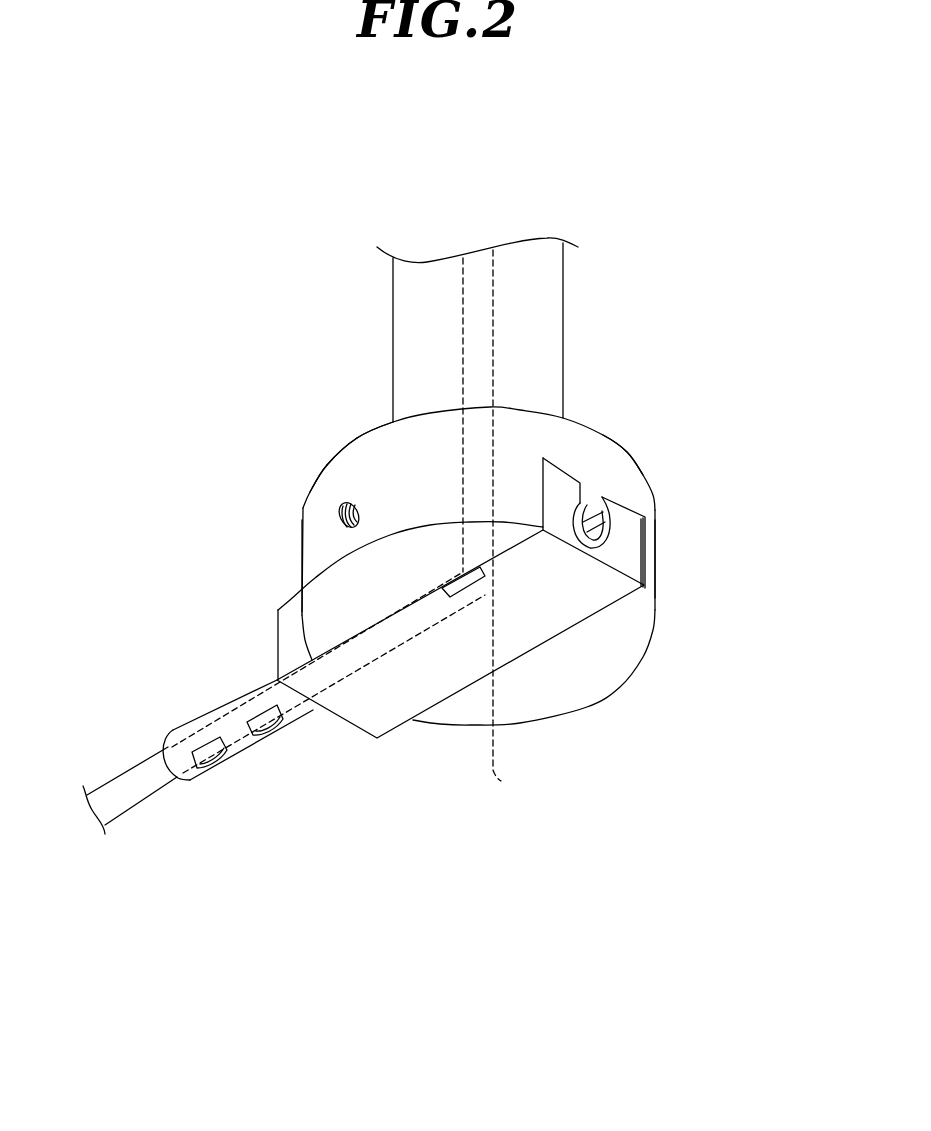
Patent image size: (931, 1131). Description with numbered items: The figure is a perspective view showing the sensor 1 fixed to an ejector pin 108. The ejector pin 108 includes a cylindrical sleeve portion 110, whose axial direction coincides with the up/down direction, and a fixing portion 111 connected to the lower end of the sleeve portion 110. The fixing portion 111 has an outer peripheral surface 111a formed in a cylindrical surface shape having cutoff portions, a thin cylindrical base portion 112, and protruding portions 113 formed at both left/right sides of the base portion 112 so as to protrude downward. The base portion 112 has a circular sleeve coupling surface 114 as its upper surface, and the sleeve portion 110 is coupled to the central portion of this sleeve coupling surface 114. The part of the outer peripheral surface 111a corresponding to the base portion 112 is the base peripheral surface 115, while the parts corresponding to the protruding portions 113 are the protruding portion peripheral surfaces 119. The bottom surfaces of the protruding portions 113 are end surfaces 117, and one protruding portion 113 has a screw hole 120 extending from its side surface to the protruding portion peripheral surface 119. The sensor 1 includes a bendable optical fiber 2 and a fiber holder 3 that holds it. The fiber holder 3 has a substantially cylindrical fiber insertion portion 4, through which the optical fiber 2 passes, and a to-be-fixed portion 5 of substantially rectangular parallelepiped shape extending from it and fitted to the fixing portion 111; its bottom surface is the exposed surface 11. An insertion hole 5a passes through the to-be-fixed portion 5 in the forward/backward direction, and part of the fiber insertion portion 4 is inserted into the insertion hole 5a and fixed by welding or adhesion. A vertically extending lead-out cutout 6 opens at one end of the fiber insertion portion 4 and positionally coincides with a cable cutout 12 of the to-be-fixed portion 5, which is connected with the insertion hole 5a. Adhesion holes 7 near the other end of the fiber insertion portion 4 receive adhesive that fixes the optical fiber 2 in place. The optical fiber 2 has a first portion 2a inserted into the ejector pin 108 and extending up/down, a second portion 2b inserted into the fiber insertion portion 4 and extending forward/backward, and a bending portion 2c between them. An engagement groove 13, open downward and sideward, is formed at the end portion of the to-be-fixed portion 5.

The sensor 1 is at (413, 688).
The optical fiber 2 is at (140, 787).
The first portion 2a is at (462, 282).
The second portion 2b is at (213, 711).
The bending portion 2c is at (511, 526).
The fiber holder 3 is at (410, 913).
The fiber insertion portion 4 is at (327, 717).
The to-be-fixed portion 5 is at (390, 727).
The insertion hole 5a is at (610, 527).
The lead-out cutout 6 is at (585, 503).
The adhesion holes 7 is at (213, 770).
The exposed surface 11 is at (538, 617).
The cable cutout 12 is at (593, 497).
The engagement groove 13 is at (473, 582).
The ejector pin 108 is at (552, 268).
The sleeve portion 110 is at (552, 283).
The fixing portion 111 is at (348, 465).
The outer peripheral surface 111a is at (373, 447).
The base portion 112 is at (568, 440).
The protruding portions 113 is at (313, 553).
The sleeve coupling surface 114 is at (323, 465).
The base peripheral surface 115 is at (595, 447).
The end surfaces 117 is at (312, 597).
The protruding portion peripheral surfaces 119 is at (322, 542).
The screw hole 120 is at (343, 505).